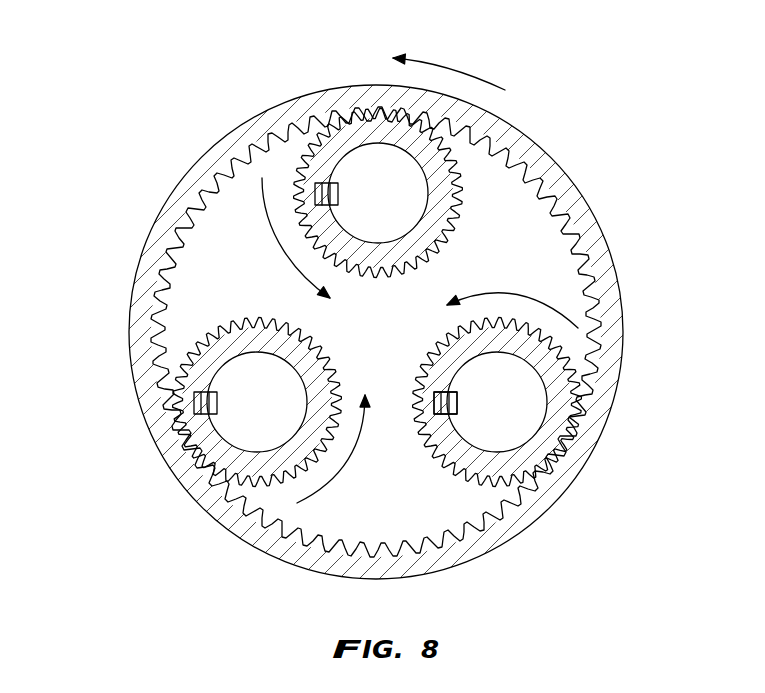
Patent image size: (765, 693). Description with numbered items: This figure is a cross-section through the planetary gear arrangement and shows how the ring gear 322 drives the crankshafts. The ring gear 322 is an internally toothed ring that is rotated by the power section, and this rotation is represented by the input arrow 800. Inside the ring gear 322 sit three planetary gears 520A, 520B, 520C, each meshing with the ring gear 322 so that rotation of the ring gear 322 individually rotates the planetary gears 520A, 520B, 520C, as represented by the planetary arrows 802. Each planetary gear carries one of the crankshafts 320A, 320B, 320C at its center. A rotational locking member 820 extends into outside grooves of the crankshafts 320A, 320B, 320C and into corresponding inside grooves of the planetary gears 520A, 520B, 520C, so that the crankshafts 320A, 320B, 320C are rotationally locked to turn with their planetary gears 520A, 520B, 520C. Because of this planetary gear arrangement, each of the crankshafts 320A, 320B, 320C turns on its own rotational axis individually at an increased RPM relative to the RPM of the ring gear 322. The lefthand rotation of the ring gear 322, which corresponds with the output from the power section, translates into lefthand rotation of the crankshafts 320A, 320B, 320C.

The ring gear 322 is at (295, 100).
The crankshaft 320A is at (540, 435).
The crankshaft 320B is at (367, 147).
The crankshaft 320C is at (233, 356).
The planetary gear 520A is at (490, 487).
The planetary gear 520B is at (460, 182).
The planetary gear 520C is at (250, 487).
The rotational locking member 820 is at (459, 396).
The input arrow 800 is at (490, 82).
The planetary arrows 802 is at (290, 283).